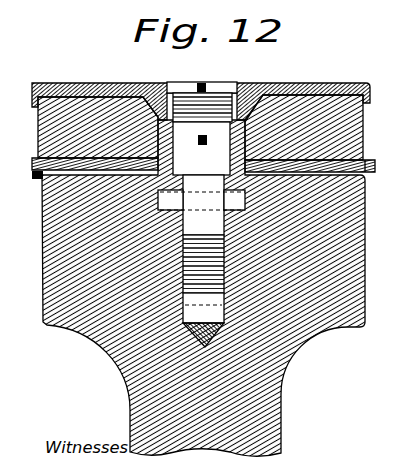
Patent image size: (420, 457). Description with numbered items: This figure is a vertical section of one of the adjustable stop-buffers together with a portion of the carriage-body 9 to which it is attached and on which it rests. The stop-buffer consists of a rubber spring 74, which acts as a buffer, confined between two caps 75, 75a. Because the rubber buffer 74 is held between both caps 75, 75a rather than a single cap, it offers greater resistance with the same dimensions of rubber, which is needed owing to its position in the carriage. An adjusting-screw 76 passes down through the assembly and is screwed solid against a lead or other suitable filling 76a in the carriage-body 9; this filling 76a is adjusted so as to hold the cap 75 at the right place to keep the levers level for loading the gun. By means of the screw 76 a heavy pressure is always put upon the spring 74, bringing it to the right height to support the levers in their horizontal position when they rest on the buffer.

The carriage-body 9 is at (212, 288).
The spring 74 is at (368, 133).
The cap 75 is at (201, 88).
The cap 75a is at (375, 165).
The adjusting-screw 76 is at (201, 202).
The filling 76a is at (205, 346).